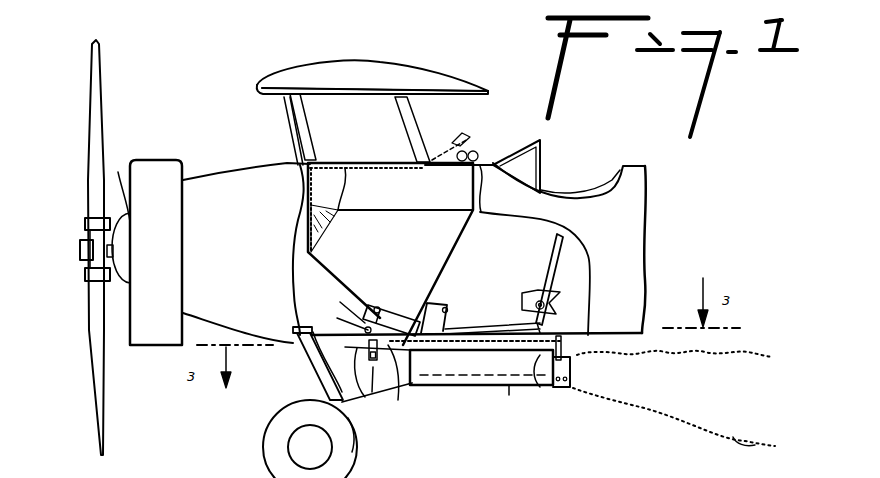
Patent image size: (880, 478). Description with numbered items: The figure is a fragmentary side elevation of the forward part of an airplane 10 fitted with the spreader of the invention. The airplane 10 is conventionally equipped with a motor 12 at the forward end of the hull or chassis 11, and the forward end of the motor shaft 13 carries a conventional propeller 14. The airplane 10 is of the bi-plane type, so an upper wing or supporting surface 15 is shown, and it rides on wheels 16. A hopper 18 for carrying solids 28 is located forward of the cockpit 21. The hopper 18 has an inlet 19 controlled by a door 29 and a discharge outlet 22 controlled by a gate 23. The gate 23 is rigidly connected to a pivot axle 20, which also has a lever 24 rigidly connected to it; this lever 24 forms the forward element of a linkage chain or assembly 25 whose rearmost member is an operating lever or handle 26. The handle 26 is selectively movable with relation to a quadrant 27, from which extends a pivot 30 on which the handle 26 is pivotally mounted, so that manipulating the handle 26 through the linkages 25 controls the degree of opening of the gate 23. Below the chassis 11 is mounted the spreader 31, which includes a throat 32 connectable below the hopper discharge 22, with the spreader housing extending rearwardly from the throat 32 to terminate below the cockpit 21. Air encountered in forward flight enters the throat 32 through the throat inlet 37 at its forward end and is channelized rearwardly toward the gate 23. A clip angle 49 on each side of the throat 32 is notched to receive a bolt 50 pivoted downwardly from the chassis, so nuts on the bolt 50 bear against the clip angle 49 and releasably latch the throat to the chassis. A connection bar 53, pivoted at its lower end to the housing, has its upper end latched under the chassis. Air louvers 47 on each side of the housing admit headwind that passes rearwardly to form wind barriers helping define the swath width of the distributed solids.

The airplane 10 is at (236, 161).
The hull or chassis 11 is at (221, 241).
The motor 12 is at (142, 157).
The motor shaft 13 is at (121, 176).
The propeller 14 is at (88, 126).
The upper wing or supporting surface 15 is at (364, 64).
The wheels 16 is at (272, 420).
The hopper 18 is at (376, 258).
The inlet 19 is at (472, 150).
The pivot axle 20 is at (340, 319).
The cockpit 21 is at (578, 190).
The discharge outlet 22 is at (408, 314).
The gate 23 is at (378, 307).
The lever 24 is at (360, 318).
The linkage chain or assembly 25 is at (485, 324).
The operating lever or handle 26 is at (547, 268).
The quadrant 27 is at (535, 292).
The solids 28 is at (328, 210).
The door 29 is at (448, 140).
The pivot 30 is at (544, 305).
The spreader 31 is at (459, 391).
The throat 32 is at (397, 388).
The throat inlet 37 is at (323, 356).
The air louvers 47 is at (510, 388).
The clip angle 49 is at (364, 364).
The bolt 50 is at (393, 340).
The connection bar 53 is at (563, 345).